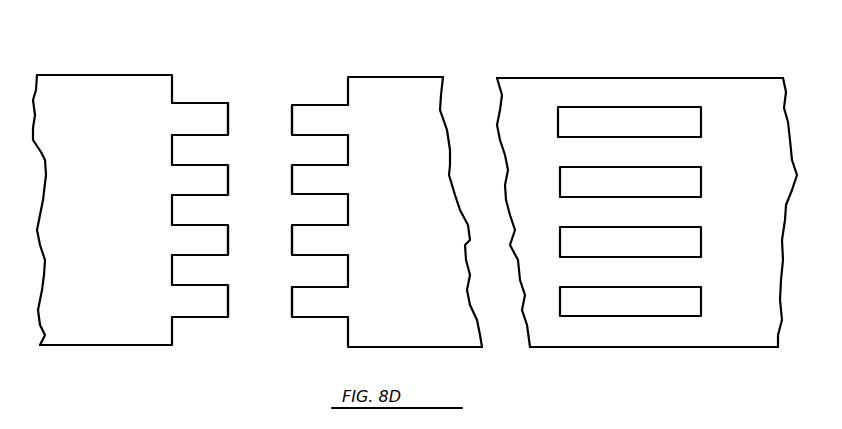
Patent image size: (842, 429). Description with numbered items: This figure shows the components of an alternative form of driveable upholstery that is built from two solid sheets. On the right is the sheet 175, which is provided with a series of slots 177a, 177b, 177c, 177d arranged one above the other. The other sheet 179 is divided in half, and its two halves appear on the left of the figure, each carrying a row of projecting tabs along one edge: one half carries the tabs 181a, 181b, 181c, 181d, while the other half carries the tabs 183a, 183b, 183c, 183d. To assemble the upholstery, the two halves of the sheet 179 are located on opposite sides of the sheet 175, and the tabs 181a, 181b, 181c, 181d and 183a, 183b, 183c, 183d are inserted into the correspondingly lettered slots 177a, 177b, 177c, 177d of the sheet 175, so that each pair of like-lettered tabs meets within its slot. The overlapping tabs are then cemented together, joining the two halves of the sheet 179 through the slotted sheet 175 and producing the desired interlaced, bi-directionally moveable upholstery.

The sheet 175 is at (541, 93).
The slot 177a is at (676, 120).
The slot 177b is at (675, 182).
The slot 177c is at (672, 243).
The slot 177d is at (677, 300).
The sheet 179 is at (150, 78).
The tab 181a is at (185, 110).
The tab 181b is at (183, 176).
The tab 181c is at (183, 238).
The tab 181d is at (192, 300).
The tab 183a is at (318, 116).
The tab 183b is at (329, 152).
The tab 183c is at (329, 213).
The tab 183d is at (329, 272).